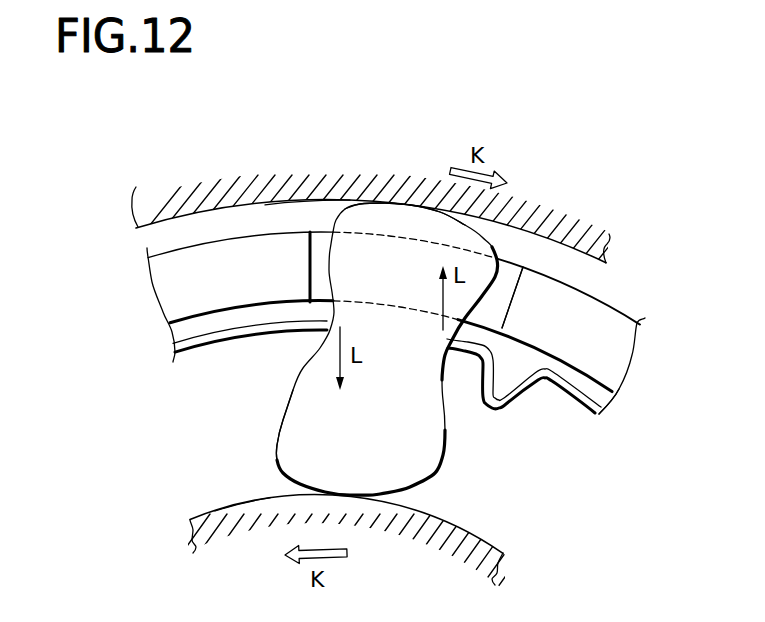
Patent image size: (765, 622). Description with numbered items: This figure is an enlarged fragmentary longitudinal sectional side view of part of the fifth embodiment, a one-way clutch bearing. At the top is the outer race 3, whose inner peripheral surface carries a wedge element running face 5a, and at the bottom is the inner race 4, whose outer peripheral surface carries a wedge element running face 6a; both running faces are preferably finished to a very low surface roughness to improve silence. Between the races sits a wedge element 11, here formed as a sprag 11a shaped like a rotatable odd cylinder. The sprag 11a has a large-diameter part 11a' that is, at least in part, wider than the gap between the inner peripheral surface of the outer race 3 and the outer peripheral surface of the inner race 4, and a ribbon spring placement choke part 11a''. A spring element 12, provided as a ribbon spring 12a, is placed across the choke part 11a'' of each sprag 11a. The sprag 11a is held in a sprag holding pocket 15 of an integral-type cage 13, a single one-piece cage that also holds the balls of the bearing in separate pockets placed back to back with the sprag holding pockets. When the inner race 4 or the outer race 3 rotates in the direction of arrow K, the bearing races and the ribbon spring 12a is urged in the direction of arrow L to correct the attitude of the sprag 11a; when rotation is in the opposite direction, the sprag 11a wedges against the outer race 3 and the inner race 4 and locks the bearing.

The outer race 3 is at (202, 197).
The wedge element running face 5a is at (305, 200).
The large-diameter part 11a' is at (405, 174).
The sprag holding pocket 15 is at (516, 292).
The integral-type cage 13 is at (637, 318).
The wedge element 11 is at (290, 385).
The sprag 11a is at (276, 455).
The ribbon spring placement choke part 11a'' is at (484, 396).
The spring element 12 is at (528, 393).
The ribbon spring 12a is at (602, 413).
The wedge element running face 6a is at (243, 510).
The inner race 4 is at (437, 530).